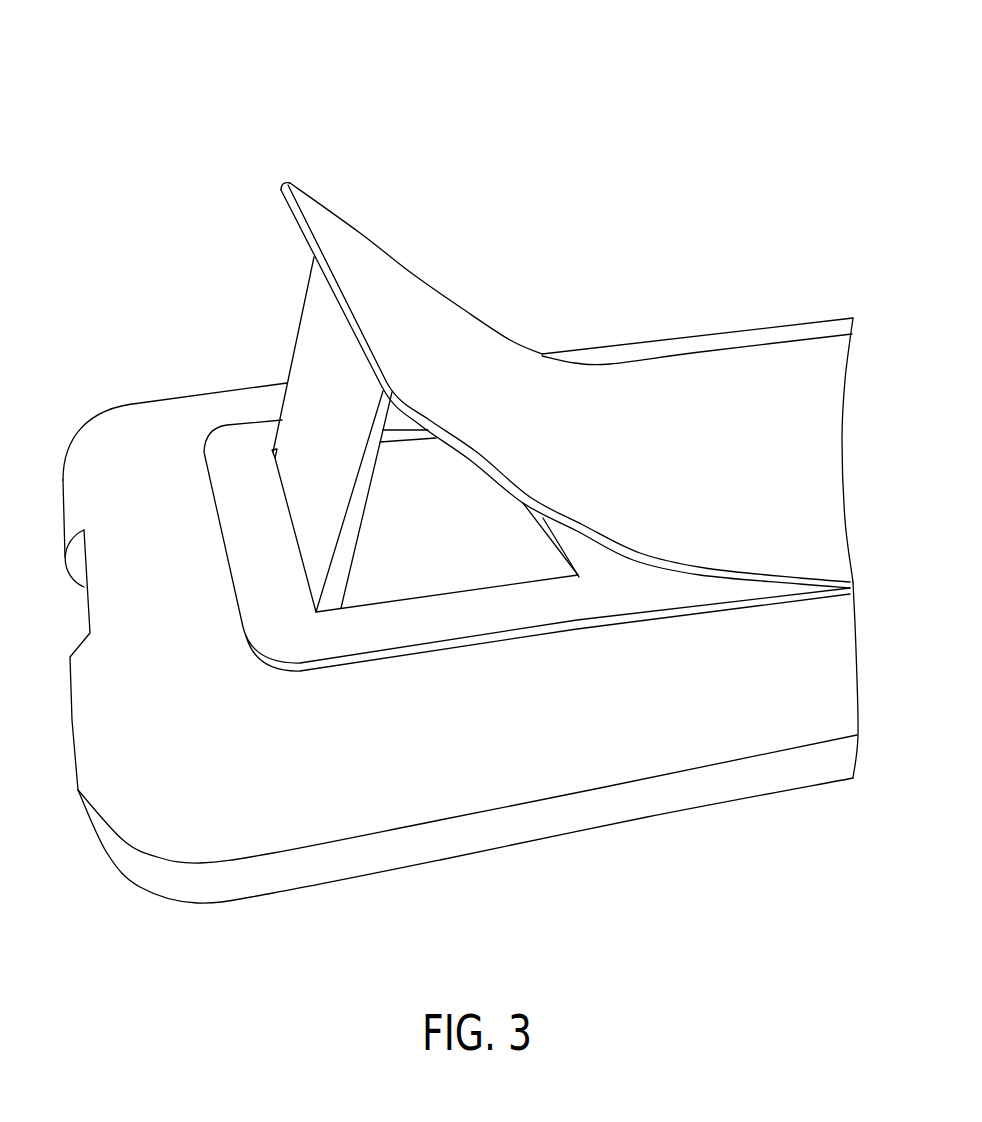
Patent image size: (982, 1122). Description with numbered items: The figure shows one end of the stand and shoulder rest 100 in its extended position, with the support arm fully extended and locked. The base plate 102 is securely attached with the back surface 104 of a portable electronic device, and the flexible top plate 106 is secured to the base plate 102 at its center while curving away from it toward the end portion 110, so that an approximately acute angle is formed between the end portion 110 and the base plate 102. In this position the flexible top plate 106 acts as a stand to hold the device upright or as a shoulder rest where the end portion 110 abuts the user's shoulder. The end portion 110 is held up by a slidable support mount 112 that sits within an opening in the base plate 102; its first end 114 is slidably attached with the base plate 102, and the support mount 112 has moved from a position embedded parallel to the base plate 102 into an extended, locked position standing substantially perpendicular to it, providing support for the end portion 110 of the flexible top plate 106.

The stand and shoulder rest 100 is at (480, 90).
The base plate 102 is at (303, 647).
The back surface 104 is at (138, 755).
The flexible top plate 106 is at (765, 382).
The end portion 110 is at (333, 240).
The slidable support mount 112 is at (317, 358).
The first end 114 is at (328, 602).